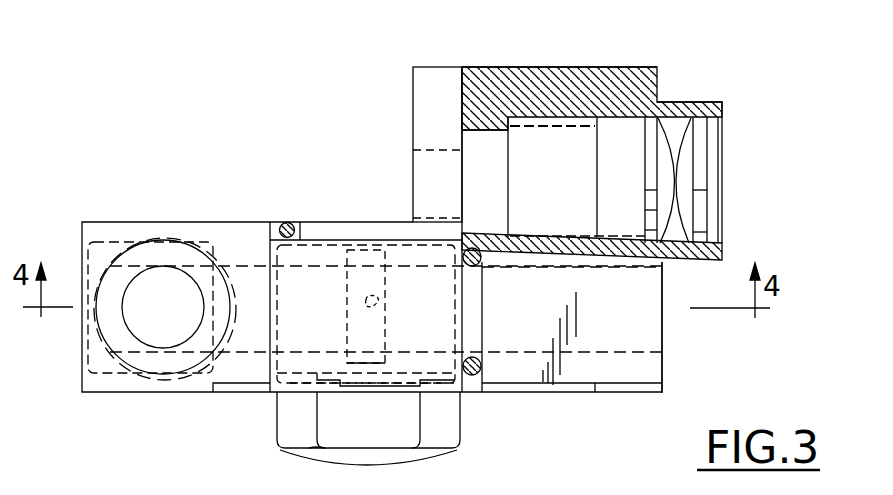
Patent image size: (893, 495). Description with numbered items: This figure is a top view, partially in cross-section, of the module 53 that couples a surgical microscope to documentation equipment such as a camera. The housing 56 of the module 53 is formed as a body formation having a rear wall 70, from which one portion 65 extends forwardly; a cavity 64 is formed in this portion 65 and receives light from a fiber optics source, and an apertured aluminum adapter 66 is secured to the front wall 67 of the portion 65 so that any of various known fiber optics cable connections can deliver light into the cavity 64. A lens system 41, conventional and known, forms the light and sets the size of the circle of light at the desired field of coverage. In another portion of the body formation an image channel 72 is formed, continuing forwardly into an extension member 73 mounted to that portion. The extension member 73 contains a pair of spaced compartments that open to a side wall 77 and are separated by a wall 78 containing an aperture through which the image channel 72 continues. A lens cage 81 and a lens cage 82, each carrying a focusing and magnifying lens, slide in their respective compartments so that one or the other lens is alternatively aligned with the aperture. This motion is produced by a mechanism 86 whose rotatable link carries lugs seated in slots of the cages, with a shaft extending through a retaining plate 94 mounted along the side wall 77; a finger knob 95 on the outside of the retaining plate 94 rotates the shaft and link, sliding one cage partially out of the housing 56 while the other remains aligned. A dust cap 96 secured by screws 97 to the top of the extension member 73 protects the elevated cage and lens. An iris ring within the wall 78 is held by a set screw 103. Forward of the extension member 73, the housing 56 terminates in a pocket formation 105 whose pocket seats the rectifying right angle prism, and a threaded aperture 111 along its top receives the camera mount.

The lens system 41 is at (672, 161).
The module 53 is at (712, 383).
The housing 56 is at (620, 58).
The cavity 64 is at (462, 135).
The portion 65 is at (534, 72).
The aluminum adapter 66 is at (423, 69).
The front wall 67 is at (462, 70).
The rear wall 70 is at (657, 80).
The image channel 72 is at (236, 374).
The extension member 73 is at (218, 214).
The side wall 77 is at (596, 389).
The wall 78 is at (362, 268).
The lens cage 81 is at (403, 406).
The lens cage 82 is at (259, 392).
The mechanism 86 is at (371, 402).
The retaining plate 94 is at (618, 396).
The finger knob 95 is at (313, 457).
The dust cap 96 is at (316, 242).
The screws 97 is at (286, 222).
The set screw 103 is at (385, 295).
The pocket formation 105 is at (100, 392).
The threaded aperture 111 is at (163, 342).